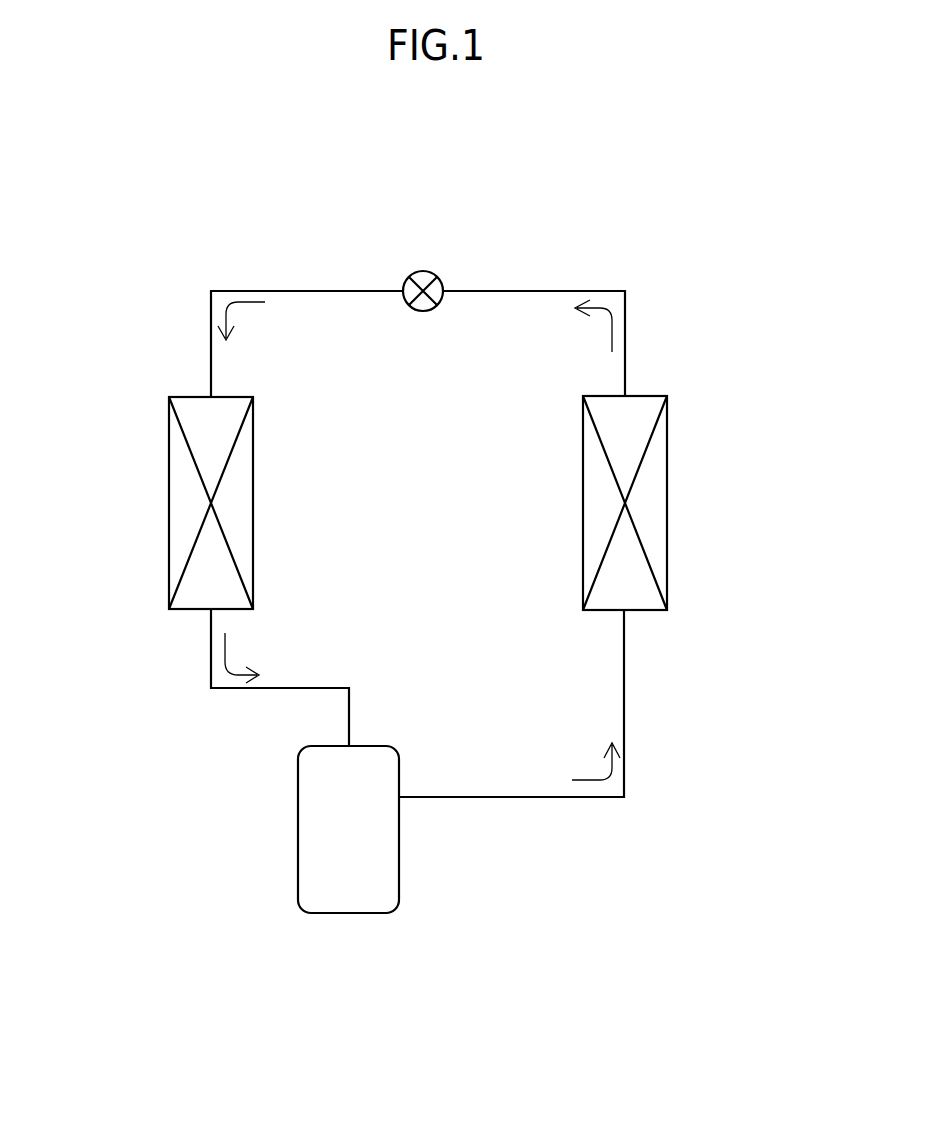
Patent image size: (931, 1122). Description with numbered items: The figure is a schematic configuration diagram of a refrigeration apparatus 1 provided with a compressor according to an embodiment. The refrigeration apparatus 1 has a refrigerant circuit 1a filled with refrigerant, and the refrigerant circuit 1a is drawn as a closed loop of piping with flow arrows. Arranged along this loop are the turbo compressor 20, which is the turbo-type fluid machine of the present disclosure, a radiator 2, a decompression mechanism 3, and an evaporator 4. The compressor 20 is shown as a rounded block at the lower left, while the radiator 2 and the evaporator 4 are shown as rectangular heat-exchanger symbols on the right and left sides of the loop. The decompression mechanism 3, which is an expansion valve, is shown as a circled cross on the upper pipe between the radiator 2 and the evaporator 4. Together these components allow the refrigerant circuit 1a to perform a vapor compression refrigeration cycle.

The refrigeration apparatus 1 is at (631, 246).
The refrigerant circuit 1a is at (494, 288).
The radiator 2 is at (668, 478).
The decompression mechanism 3 is at (406, 278).
The evaporator 4 is at (168, 453).
The turbo compressor 20 is at (400, 848).